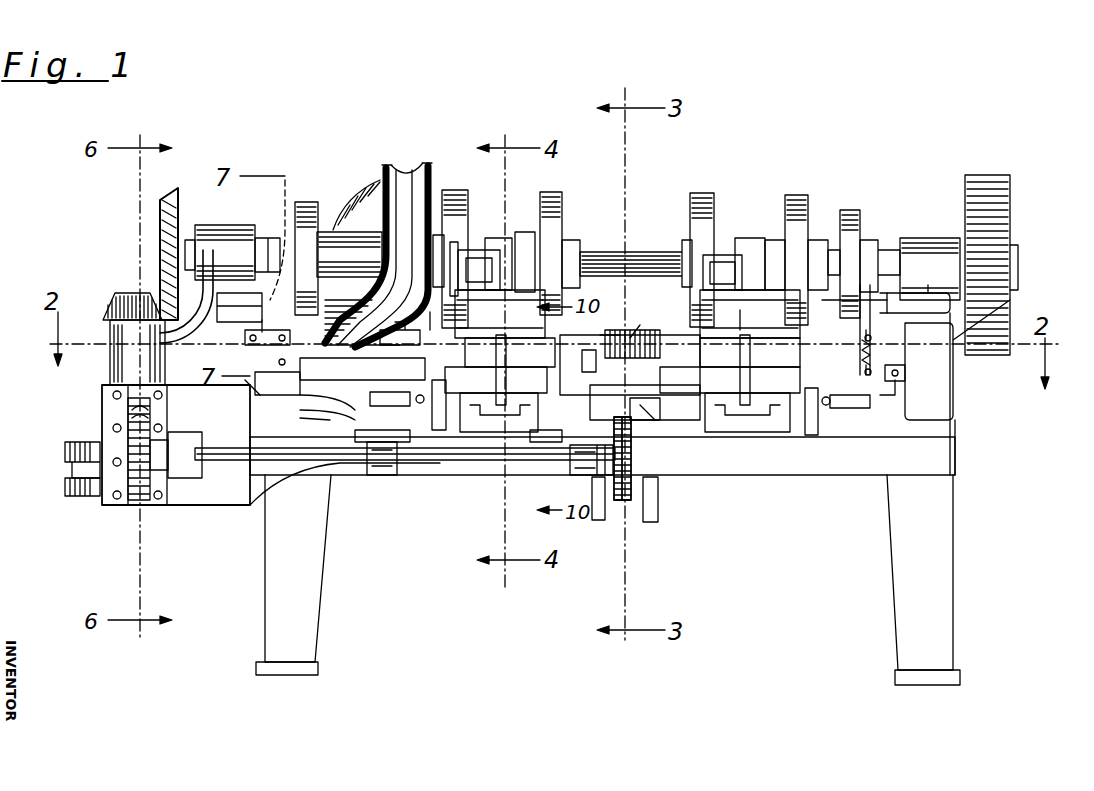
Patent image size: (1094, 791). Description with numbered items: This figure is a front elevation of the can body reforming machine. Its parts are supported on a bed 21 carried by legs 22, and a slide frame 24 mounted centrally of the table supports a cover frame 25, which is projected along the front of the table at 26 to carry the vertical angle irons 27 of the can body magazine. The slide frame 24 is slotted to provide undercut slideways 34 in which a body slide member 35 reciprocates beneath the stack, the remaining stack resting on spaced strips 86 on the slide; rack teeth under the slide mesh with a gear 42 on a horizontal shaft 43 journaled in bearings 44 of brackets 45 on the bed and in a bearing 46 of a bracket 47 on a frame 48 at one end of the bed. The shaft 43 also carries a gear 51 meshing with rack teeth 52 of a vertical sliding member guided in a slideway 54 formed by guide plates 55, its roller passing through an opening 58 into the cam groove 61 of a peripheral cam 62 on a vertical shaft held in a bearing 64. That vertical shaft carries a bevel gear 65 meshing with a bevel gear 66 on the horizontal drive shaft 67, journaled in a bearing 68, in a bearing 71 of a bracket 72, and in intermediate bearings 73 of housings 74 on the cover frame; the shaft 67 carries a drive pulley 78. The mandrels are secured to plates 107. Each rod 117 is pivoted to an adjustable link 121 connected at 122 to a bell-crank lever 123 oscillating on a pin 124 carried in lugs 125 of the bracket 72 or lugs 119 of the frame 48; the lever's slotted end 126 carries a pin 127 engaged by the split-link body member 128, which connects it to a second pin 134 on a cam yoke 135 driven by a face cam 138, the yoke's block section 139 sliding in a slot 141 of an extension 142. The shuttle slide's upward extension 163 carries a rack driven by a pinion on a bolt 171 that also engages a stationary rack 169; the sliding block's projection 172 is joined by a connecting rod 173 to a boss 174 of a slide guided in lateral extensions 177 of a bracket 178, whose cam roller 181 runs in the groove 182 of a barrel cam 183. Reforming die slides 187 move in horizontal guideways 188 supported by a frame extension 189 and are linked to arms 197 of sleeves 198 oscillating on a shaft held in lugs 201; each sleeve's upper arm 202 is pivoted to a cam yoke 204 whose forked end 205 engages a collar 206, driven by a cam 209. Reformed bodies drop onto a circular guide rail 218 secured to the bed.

The bed 21 is at (950, 455).
The legs 22 is at (608, 580).
The slide frame 24 is at (698, 425).
The cover frame 25 is at (792, 435).
The frame projection 26 is at (645, 396).
The vertical angle irons 27 is at (604, 372).
The slideways 34 is at (650, 418).
The body slide member 35 is at (640, 410).
The gear 42 is at (624, 478).
The horizontal shaft 43 is at (432, 462).
The bearings 44 is at (382, 476).
The brackets 45 is at (362, 476).
The bearing 46 is at (200, 470).
The bracket 47 is at (203, 436).
The frame 48 is at (204, 378).
The gear 51 is at (152, 420).
The rack teeth 52 is at (128, 415).
The slideway 54 is at (128, 405).
The guide plates 55 is at (110, 390).
The opening 58 is at (136, 500).
The cam groove 61 is at (70, 466).
The peripheral cam 62 is at (65, 450).
The bearing 64 is at (110, 370).
The bevel gear 65 is at (128, 292).
The bevel gear 66 is at (178, 195).
The horizontal drive shaft 67 is at (640, 258).
The bearing 68 is at (218, 235).
The bearing 71 is at (930, 250).
The bracket 72 is at (953, 335).
The intermediate bearings 73 is at (498, 240).
The housings 74 is at (627, 312).
The drive pulley 78 is at (985, 178).
The spaced strips 86 is at (648, 400).
The plate 107 is at (440, 430).
The rod 117 is at (415, 406).
The spaced lugs 119 is at (248, 330).
The adjustable link 121 is at (360, 412).
The pivotal connection 122 is at (262, 396).
The bell-crank lever 123 is at (258, 388).
The pin 124 is at (246, 338).
The spaced lugs 125 is at (906, 368).
The slotted end 126 is at (862, 372).
The horizontal pin 127 is at (860, 372).
The body member 128 is at (905, 348).
The second pin 134 is at (858, 340).
The cam yoke 135 is at (866, 248).
The face cam 138 is at (306, 205).
The block section 139 is at (847, 301).
The slot 141 is at (268, 238).
The extension 142 is at (935, 280).
The upward extension of shuttle slide 163 is at (630, 365).
The second rack 169 is at (637, 340).
The bolt 171 is at (648, 320).
The rearward projection 172 is at (595, 335).
The connecting rod 173 is at (434, 309).
The boss 174 is at (400, 328).
The lateral extensions 177 is at (362, 368).
The bracket 178 is at (336, 394).
The cam roller 181 is at (336, 367).
The groove 182 is at (410, 170).
The barrel cam 183 is at (366, 185).
The slides 187 is at (756, 436).
The horizontal guideway 188 is at (760, 420).
The frame extension 189 is at (742, 432).
The arm 197 is at (516, 381).
The sleeve 198 is at (744, 309).
The spaced lugs 201 is at (632, 352).
The upwardly extending arm 202 is at (700, 300).
The cam yoke 204 is at (468, 258).
The forked end 205 is at (526, 238).
The collar 206 is at (475, 245).
The cam 209 is at (458, 210).
The circular guide rail 218 is at (652, 520).